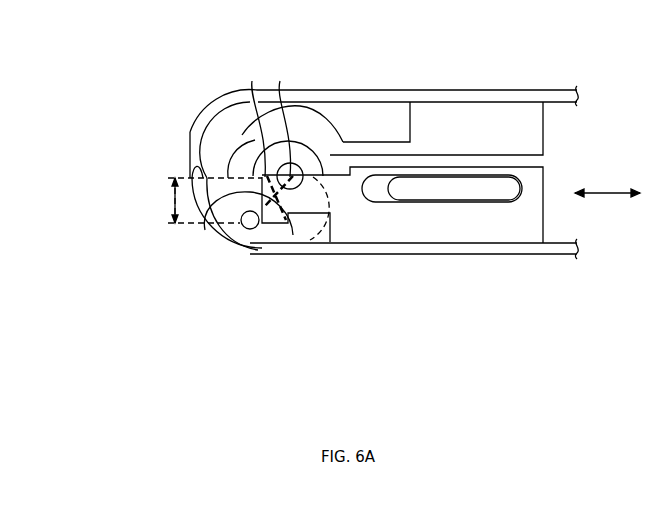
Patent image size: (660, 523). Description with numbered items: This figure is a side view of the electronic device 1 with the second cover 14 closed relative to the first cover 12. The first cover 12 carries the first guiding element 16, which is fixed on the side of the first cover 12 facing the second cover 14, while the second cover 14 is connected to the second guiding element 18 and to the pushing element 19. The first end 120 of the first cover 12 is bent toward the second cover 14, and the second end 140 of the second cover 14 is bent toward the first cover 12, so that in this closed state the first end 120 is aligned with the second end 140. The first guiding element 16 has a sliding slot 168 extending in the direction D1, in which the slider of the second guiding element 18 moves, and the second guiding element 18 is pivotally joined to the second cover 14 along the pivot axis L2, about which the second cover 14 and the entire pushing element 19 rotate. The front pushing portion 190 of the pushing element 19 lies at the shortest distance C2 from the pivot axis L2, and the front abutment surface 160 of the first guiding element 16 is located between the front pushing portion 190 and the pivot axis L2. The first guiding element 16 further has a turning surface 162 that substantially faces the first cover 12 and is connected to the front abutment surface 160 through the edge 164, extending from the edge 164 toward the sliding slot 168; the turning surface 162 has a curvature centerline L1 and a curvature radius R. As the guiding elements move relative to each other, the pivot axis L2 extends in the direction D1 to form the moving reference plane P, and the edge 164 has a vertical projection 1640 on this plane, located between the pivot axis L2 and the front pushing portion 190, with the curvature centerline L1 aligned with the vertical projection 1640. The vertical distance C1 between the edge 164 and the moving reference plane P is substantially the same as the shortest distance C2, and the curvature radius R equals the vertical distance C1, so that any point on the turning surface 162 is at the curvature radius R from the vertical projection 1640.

The electronic device 1 is at (121, 27).
The first cover 12 is at (386, 245).
The second cover 14 is at (515, 90).
The first guiding element 16 is at (427, 228).
The second guiding element 18 is at (475, 188).
The pushing element 19 is at (243, 155).
The first end 120 is at (197, 165).
The second end 140 is at (195, 124).
The front abutment surface 160 is at (215, 247).
The turning surface 162 is at (320, 178).
The edge 164 is at (290, 250).
The sliding slot 168 is at (447, 203).
The front pushing portion 190 is at (258, 252).
The vertical projection 1640 is at (240, 148).
The curvature centerline L1 is at (252, 121).
The pivot axis L2 is at (280, 121).
The curvature radius R is at (287, 222).
The moving reference plane P is at (186, 178).
The vertical distance C1 is at (194, 200).
The shortest distance C2 is at (326, 226).
The direction D1 is at (607, 184).